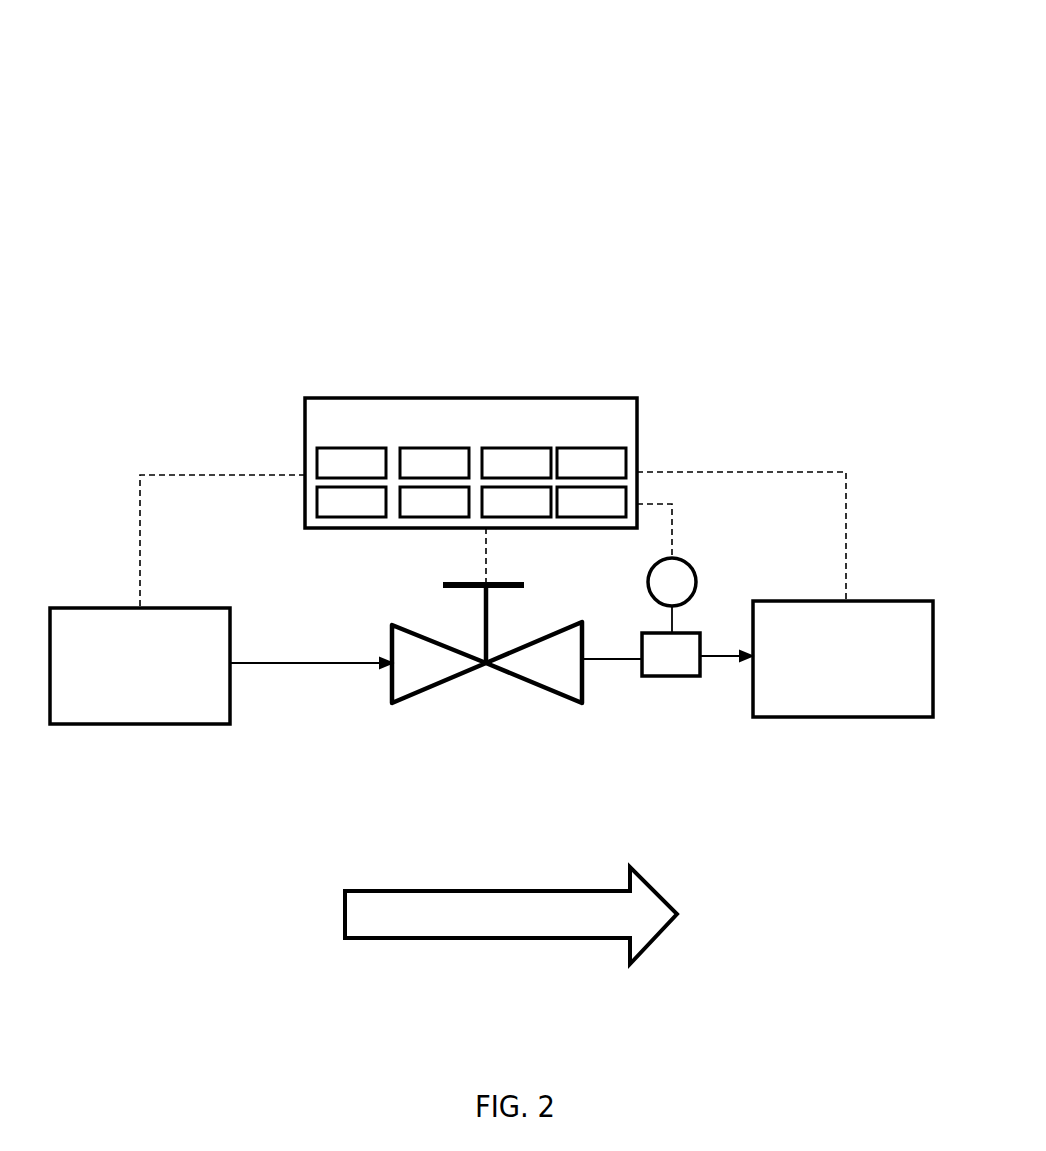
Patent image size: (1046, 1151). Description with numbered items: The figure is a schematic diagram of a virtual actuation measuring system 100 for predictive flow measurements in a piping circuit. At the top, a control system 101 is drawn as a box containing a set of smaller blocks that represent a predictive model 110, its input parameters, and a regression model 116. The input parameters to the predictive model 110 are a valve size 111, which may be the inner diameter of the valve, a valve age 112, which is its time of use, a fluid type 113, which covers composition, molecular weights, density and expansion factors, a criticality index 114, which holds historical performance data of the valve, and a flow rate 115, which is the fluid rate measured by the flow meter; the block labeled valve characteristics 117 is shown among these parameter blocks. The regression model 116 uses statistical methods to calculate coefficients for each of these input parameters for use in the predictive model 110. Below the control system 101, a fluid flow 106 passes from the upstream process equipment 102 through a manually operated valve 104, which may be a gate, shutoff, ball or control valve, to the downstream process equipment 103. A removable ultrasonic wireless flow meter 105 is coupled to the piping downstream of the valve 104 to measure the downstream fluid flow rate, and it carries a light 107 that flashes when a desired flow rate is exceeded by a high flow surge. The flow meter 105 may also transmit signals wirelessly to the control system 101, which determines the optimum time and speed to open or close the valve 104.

The virtual actuation measuring system 100 is at (254, 176).
The control system 101 is at (471, 463).
The upstream process equipment 102 is at (140, 666).
The downstream process equipment 103 is at (843, 659).
The manually operated valve 104 is at (557, 695).
The removable ultrasonic wireless flow meter 105 is at (673, 677).
The fluid flow 106 is at (511, 915).
The light 107 is at (700, 678).
The predictive model 110 is at (350, 458).
The valve size 111 is at (427, 460).
The valve age 112 is at (505, 460).
The fluid type 113 is at (604, 455).
The criticality index 114 is at (355, 508).
The flow rate 115 is at (447, 507).
The regression model 116 is at (533, 503).
The valve characteristics 117 is at (622, 492).